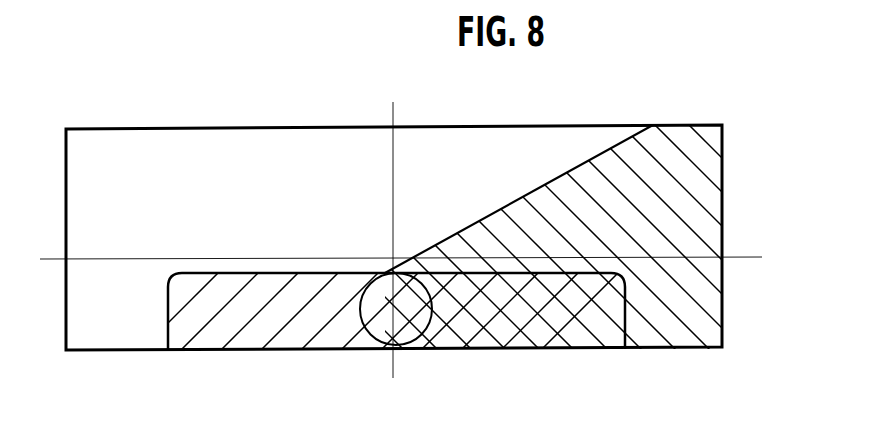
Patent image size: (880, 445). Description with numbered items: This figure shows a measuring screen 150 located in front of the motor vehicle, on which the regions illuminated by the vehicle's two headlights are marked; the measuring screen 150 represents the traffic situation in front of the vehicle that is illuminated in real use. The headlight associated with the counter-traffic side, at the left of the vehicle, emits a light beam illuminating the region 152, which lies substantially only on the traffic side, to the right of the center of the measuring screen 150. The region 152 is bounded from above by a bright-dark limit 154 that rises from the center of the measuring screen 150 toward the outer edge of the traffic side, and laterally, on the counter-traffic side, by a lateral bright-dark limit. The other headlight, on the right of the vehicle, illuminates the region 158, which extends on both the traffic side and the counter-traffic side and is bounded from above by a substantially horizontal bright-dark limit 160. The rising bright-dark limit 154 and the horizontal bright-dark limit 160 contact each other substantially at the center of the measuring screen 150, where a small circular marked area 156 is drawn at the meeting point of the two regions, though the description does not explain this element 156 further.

The measuring screen 150 is at (110, 146).
The region 152 is at (705, 233).
The bright-dark limit 154 is at (522, 202).
The ball 156 is at (362, 315).
The region 158 is at (222, 337).
The horizontal bright-dark limit 160 is at (297, 273).